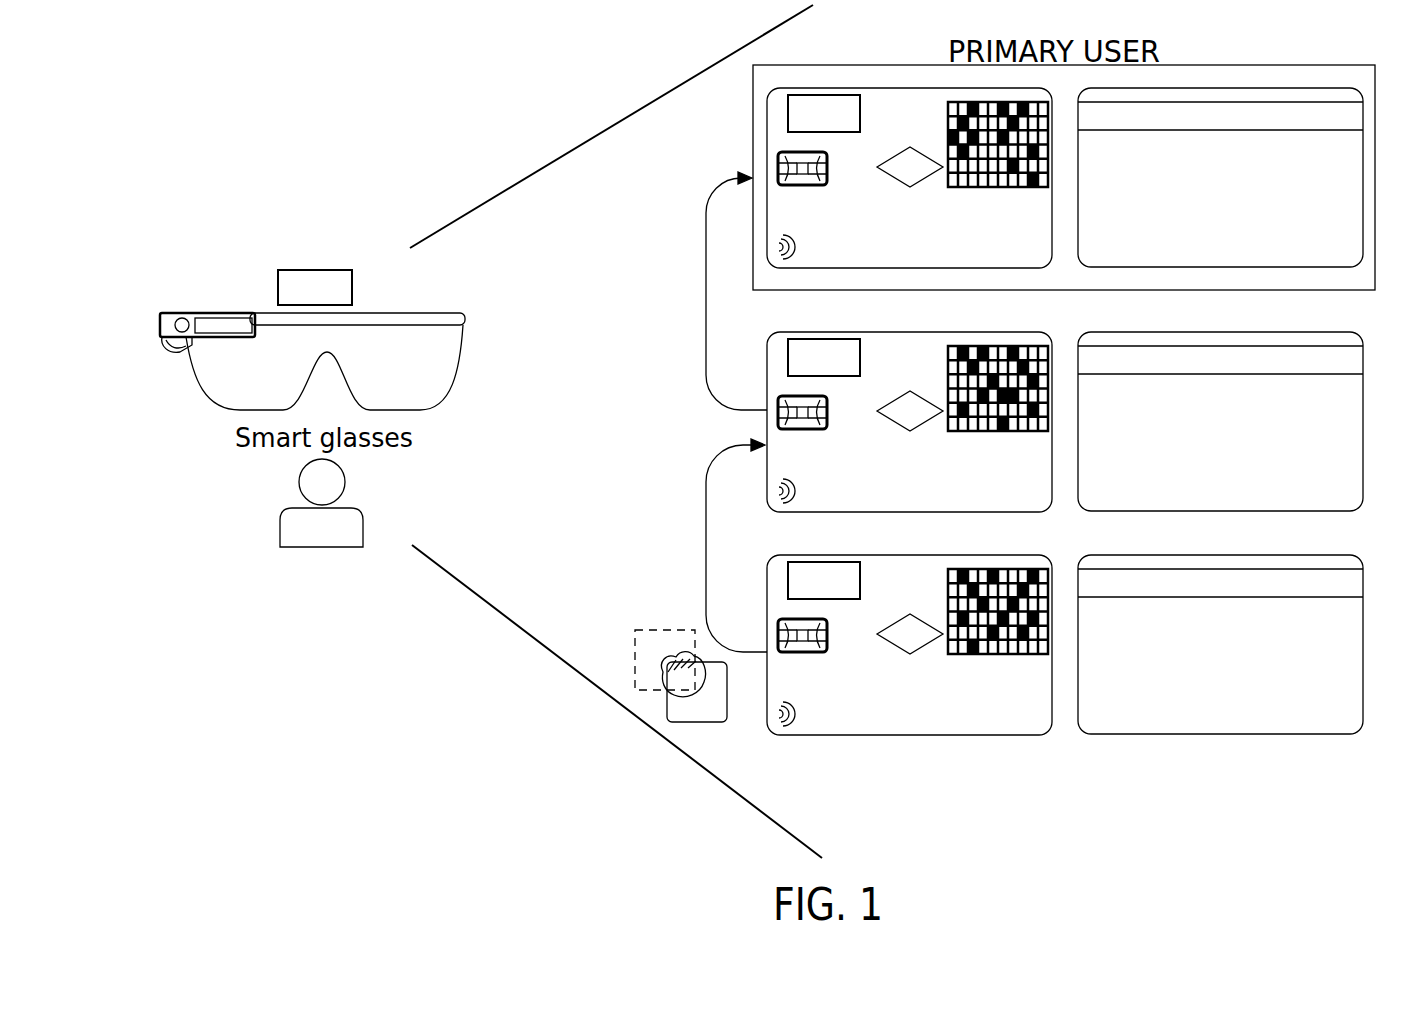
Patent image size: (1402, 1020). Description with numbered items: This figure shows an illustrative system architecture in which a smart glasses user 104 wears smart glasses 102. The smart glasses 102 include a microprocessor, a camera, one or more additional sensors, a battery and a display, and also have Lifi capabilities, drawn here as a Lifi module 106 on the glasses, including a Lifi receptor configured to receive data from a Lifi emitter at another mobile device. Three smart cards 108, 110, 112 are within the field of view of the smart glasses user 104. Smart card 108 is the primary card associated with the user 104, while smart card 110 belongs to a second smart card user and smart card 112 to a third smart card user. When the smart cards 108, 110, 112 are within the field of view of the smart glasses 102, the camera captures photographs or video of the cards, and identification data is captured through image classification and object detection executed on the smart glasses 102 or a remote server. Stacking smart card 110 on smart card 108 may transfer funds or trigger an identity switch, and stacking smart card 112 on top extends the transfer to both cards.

The smart glasses 102 is at (180, 312).
The smart glasses user 104 is at (318, 548).
The LiFi module of smart glasses 106 is at (297, 269).
The smart card 108 is at (788, 122).
The smart card 110 is at (787, 362).
The smart card 112 is at (787, 580).